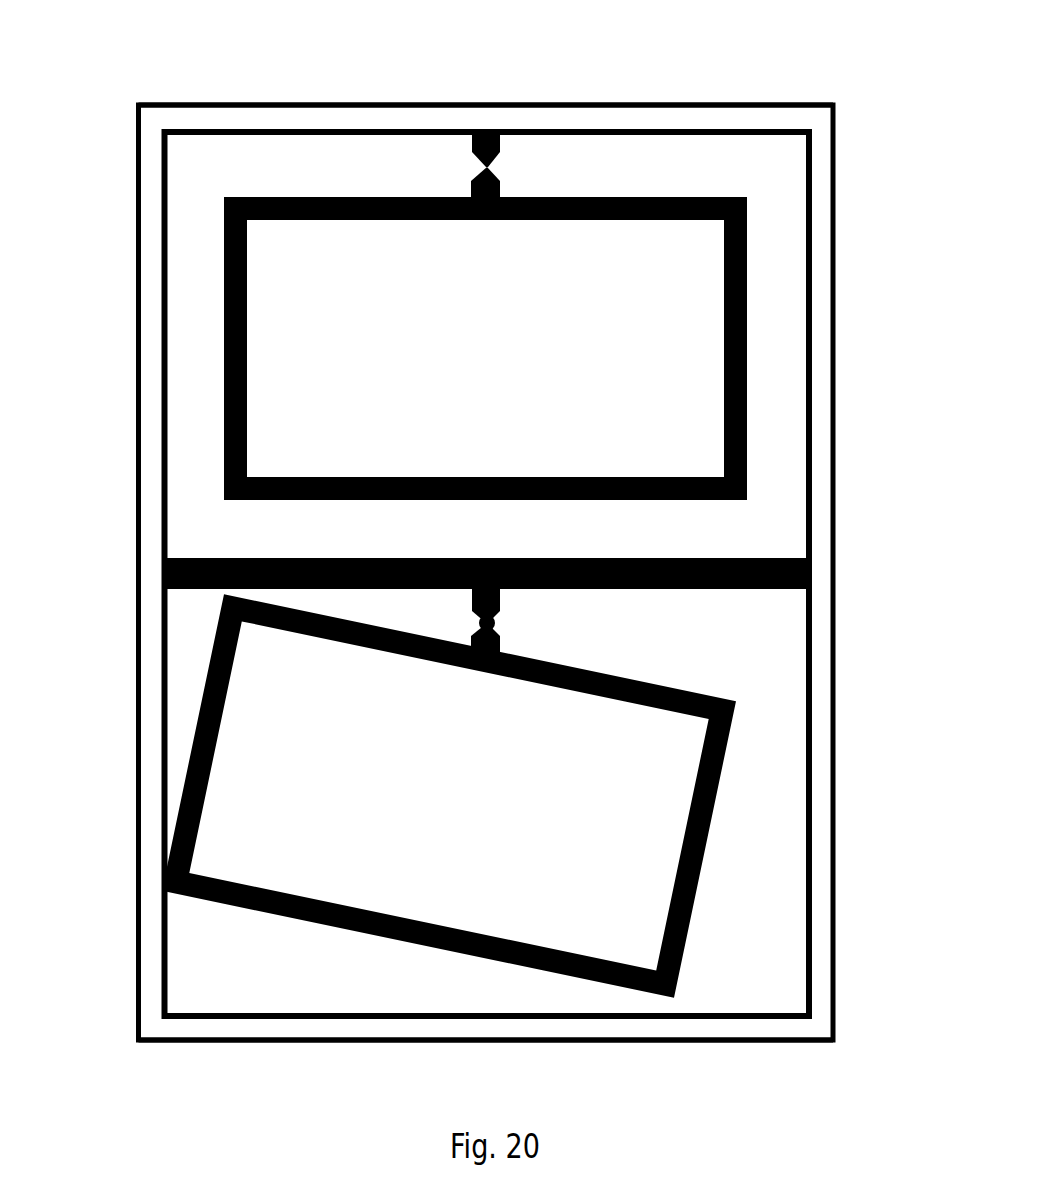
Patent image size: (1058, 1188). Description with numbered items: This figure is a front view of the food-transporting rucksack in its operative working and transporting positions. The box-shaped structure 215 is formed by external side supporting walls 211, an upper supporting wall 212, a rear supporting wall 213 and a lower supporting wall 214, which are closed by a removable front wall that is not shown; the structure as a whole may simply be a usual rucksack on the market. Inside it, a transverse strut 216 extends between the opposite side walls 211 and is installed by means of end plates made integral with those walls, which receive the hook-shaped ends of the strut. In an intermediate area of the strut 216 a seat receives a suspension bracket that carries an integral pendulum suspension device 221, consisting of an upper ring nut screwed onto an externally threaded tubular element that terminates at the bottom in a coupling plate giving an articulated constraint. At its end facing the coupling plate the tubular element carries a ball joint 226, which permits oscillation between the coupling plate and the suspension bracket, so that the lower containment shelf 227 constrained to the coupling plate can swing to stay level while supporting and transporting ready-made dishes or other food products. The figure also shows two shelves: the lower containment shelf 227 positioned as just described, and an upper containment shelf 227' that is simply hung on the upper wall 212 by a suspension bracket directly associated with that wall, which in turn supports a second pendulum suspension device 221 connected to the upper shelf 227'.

The external side supporting wall 211 is at (132, 454).
The upper supporting wall 212 is at (477, 92).
The rear supporting wall 213 is at (488, 803).
The lower supporting wall 214 is at (373, 1055).
The box-shaped structure 215 is at (788, 92).
The transverse strut 216 is at (731, 548).
The pendulum suspension device 221 is at (523, 160).
The ball joint 226 is at (460, 634).
The containment shelf 227 is at (449, 796).
The upper containment shelf 227' is at (573, 348).